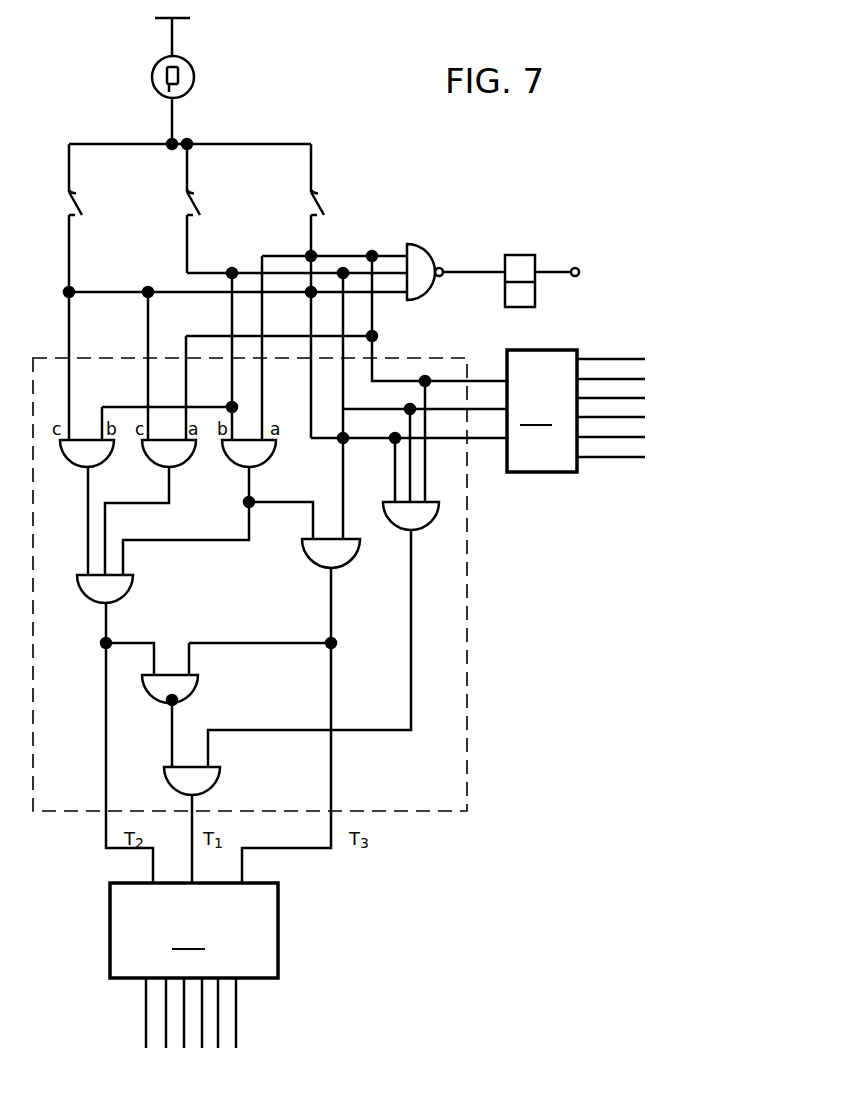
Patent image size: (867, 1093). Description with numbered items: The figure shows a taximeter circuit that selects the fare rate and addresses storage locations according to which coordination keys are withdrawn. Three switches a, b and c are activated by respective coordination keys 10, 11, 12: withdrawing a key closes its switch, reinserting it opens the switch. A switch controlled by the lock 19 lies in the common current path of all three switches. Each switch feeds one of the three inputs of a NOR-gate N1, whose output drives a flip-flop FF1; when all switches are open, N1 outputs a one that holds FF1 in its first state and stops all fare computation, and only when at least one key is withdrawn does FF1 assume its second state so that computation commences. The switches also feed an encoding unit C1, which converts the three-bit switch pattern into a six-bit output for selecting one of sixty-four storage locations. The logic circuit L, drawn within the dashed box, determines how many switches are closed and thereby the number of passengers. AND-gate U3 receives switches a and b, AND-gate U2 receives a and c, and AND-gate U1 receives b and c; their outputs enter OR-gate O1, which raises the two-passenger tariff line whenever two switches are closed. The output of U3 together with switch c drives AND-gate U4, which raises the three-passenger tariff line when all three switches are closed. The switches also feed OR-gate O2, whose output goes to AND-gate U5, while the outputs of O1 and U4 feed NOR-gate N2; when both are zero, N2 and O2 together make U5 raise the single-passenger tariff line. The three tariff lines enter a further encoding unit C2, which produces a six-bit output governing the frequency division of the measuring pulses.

The lock 19 is at (184, 87).
The coordination key 12 is at (88, 201).
The coordination key 11 is at (205, 201).
The coordination key 10 is at (330, 201).
The NOR-gate N1 is at (427, 258).
The flip-flop FF1 is at (532, 262).
The logic circuit L is at (470, 700).
The AND-gate U1 is at (90, 463).
The AND-gate U2 is at (171, 463).
The AND-gate U3 is at (251, 463).
The AND-gate U4 is at (334, 563).
The AND-gate U5 is at (207, 790).
The OR-gate O1 is at (112, 598).
The OR-gate O2 is at (414, 525).
The NOR-gate N2 is at (218, 705).
The encoding unit C1 is at (540, 472).
The encoding unit C2 is at (278, 925).